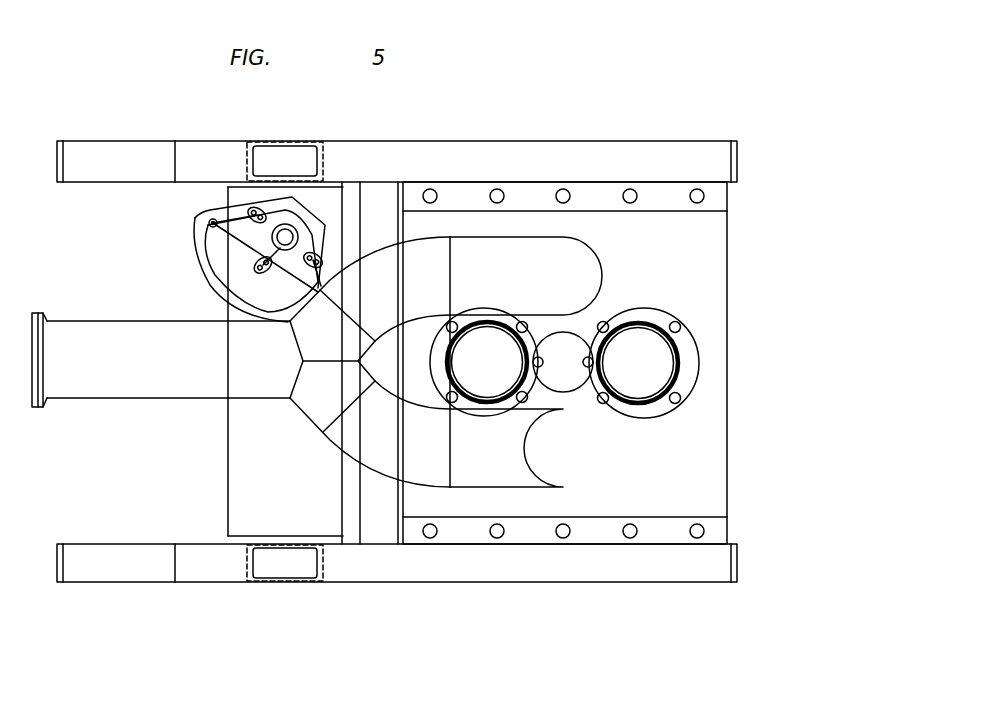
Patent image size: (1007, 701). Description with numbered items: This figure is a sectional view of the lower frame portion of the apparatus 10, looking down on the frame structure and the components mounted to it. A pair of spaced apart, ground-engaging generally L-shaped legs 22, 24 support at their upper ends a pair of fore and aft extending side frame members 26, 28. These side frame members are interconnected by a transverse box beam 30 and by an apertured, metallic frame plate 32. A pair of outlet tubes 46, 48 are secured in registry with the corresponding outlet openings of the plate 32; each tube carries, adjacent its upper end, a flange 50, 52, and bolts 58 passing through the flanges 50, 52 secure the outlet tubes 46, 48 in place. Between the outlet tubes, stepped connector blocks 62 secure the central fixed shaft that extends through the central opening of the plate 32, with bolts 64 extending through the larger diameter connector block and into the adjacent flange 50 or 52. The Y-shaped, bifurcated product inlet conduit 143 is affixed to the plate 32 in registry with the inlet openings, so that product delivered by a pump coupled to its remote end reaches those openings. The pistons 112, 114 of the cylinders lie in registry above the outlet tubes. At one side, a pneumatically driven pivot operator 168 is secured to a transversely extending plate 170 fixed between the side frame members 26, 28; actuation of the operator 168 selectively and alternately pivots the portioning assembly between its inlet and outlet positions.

The exhaust manifold assembly 10 is at (634, 121).
The ground-engaging L-shaped leg 22 is at (227, 141).
The ground-engaging L-shaped leg 24 is at (258, 582).
The side frame member 26 is at (433, 158).
The side frame member 28 is at (470, 563).
The transverse box beam 30 is at (380, 198).
The frame plate 32 is at (695, 477).
The outlet tube 46 is at (467, 364).
The outlet tube 48 is at (706, 377).
The flange 50 is at (437, 350).
The flange 52 is at (653, 413).
The bolt 58 is at (687, 398).
The stepped connector block 62 is at (605, 360).
The bolt 64 is at (590, 368).
The shiftable piston 112 is at (488, 372).
The shiftable piston 114 is at (652, 363).
The inlet pipe 143 is at (73, 385).
The pneumatically driven pivot operator 168 is at (203, 240).
The transversely extending plate 170 is at (245, 497).